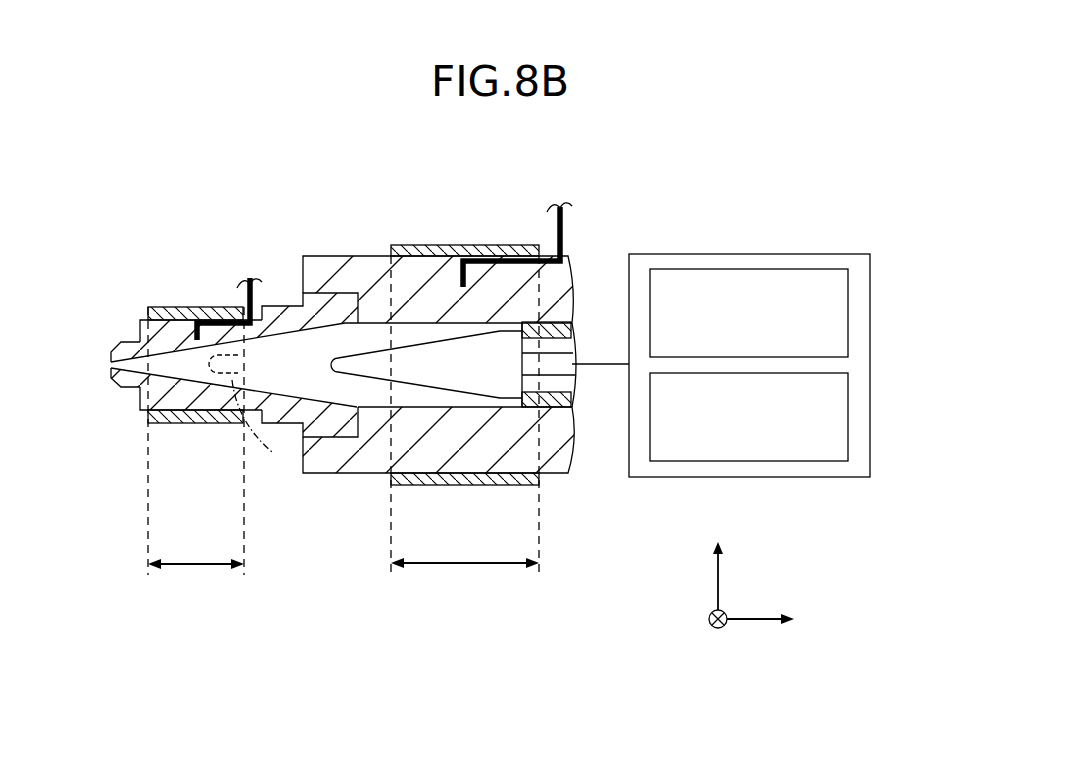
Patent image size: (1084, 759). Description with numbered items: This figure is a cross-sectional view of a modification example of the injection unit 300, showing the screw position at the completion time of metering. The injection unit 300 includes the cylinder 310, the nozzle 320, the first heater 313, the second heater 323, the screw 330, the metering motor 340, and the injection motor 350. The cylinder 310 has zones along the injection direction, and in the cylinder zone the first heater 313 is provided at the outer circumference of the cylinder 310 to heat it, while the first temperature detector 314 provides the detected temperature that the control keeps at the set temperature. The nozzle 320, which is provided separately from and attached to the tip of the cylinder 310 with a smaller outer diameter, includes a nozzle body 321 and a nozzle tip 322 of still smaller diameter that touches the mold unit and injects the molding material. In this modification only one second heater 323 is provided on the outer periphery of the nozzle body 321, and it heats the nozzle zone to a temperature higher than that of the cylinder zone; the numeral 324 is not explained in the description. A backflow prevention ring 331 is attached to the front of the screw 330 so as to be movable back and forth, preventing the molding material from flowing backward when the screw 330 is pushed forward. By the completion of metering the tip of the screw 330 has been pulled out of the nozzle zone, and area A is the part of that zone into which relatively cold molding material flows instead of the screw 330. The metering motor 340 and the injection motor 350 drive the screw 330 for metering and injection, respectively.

The injection unit 300 is at (108, 213).
The cylinder 310 is at (355, 268).
The first heater 313 is at (463, 486).
The first temperature detector 314 is at (450, 268).
The nozzle 320 is at (282, 315).
The nozzle body 321 is at (142, 402).
The nozzle tip 322 is at (132, 384).
The second heater 323 is at (197, 424).
The nozzle heater (upper) 324 is at (183, 322).
The screw 330 is at (567, 334).
The backflow prevention ring 331 is at (556, 400).
The metering motor 340 is at (848, 420).
The injection motor 350 is at (848, 314).